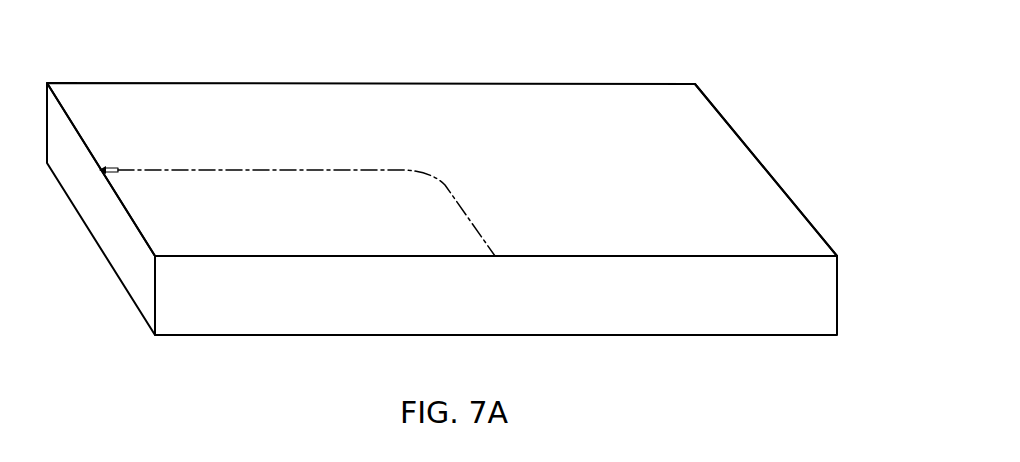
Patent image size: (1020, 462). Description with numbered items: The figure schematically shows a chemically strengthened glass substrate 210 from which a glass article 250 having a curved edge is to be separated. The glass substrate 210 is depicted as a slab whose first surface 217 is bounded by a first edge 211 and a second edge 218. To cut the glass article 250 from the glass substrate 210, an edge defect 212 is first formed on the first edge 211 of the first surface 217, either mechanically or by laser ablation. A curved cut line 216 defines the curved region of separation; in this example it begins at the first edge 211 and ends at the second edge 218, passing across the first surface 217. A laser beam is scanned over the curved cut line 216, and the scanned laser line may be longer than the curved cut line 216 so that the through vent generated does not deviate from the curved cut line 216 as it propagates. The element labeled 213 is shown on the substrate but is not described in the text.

The glass substrate 210 is at (475, 237).
The first edge 211 is at (116, 242).
The edge defect 212 is at (111, 167).
The right side edge 213 is at (794, 203).
The curved cut line 216 is at (380, 170).
The first surface 217 is at (621, 169).
The second edge 218 is at (580, 257).
The glass article 250 is at (248, 183).